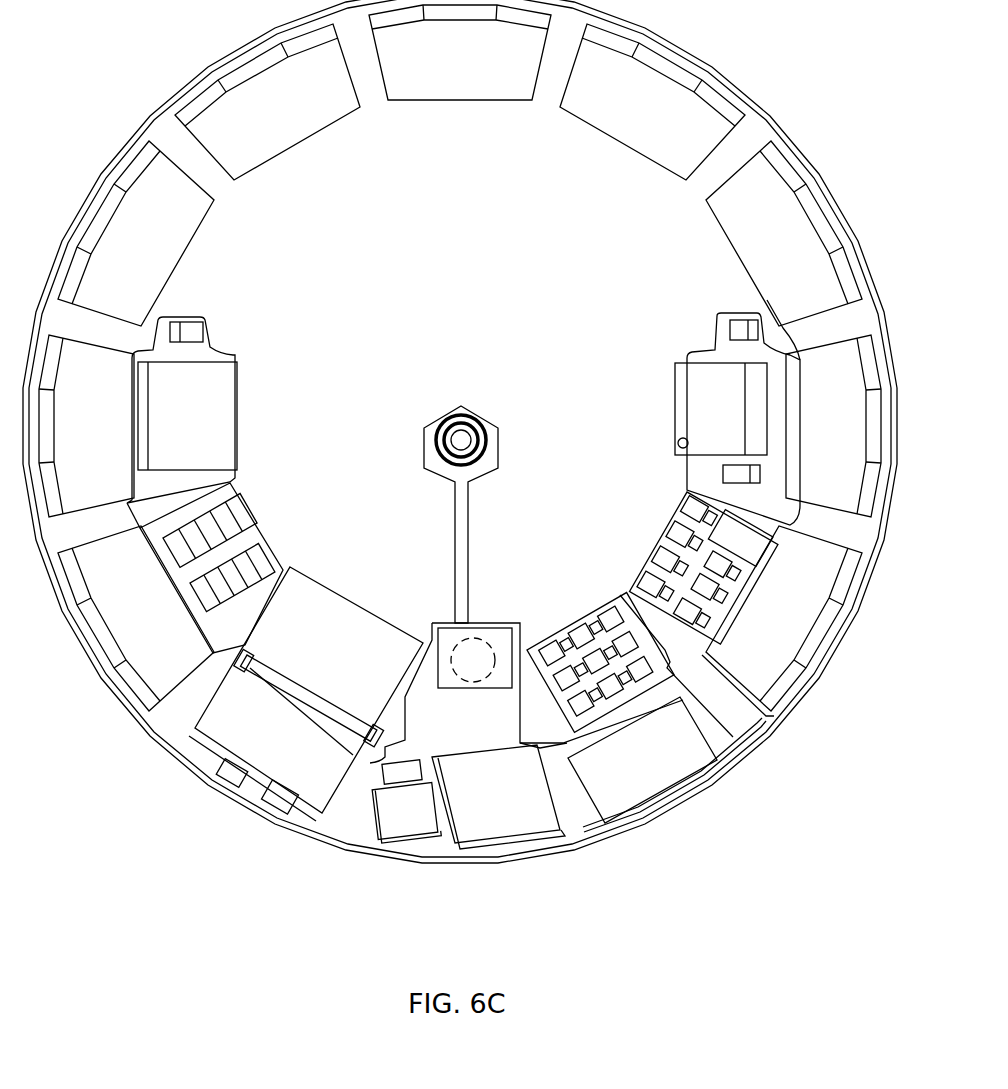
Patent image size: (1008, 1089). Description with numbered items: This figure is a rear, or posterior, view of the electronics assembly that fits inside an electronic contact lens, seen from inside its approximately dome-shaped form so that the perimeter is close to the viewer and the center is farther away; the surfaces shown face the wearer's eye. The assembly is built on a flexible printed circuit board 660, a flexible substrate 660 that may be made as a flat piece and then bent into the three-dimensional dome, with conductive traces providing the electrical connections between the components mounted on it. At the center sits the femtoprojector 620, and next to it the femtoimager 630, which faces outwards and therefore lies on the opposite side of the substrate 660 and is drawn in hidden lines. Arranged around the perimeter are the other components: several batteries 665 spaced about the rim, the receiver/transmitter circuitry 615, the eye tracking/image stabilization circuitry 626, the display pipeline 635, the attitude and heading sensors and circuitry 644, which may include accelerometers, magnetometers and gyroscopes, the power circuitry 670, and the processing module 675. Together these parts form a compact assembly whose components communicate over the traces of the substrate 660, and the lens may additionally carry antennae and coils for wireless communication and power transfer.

The femtoprojector 620 is at (428, 410).
The femtoimager 630 is at (487, 642).
The flexible printed circuit board 660 is at (547, 853).
The batteries 665 is at (480, 76).
The eye tracking/image stabilization circuitry 626 is at (208, 429).
The attitude and heading sensors and circuitry 644 is at (729, 441).
The processing module 675 is at (801, 626).
The power circuitry 670 is at (661, 772).
The display pipeline 635 is at (514, 804).
The receiver/transmitter circuitry 615 is at (295, 757).